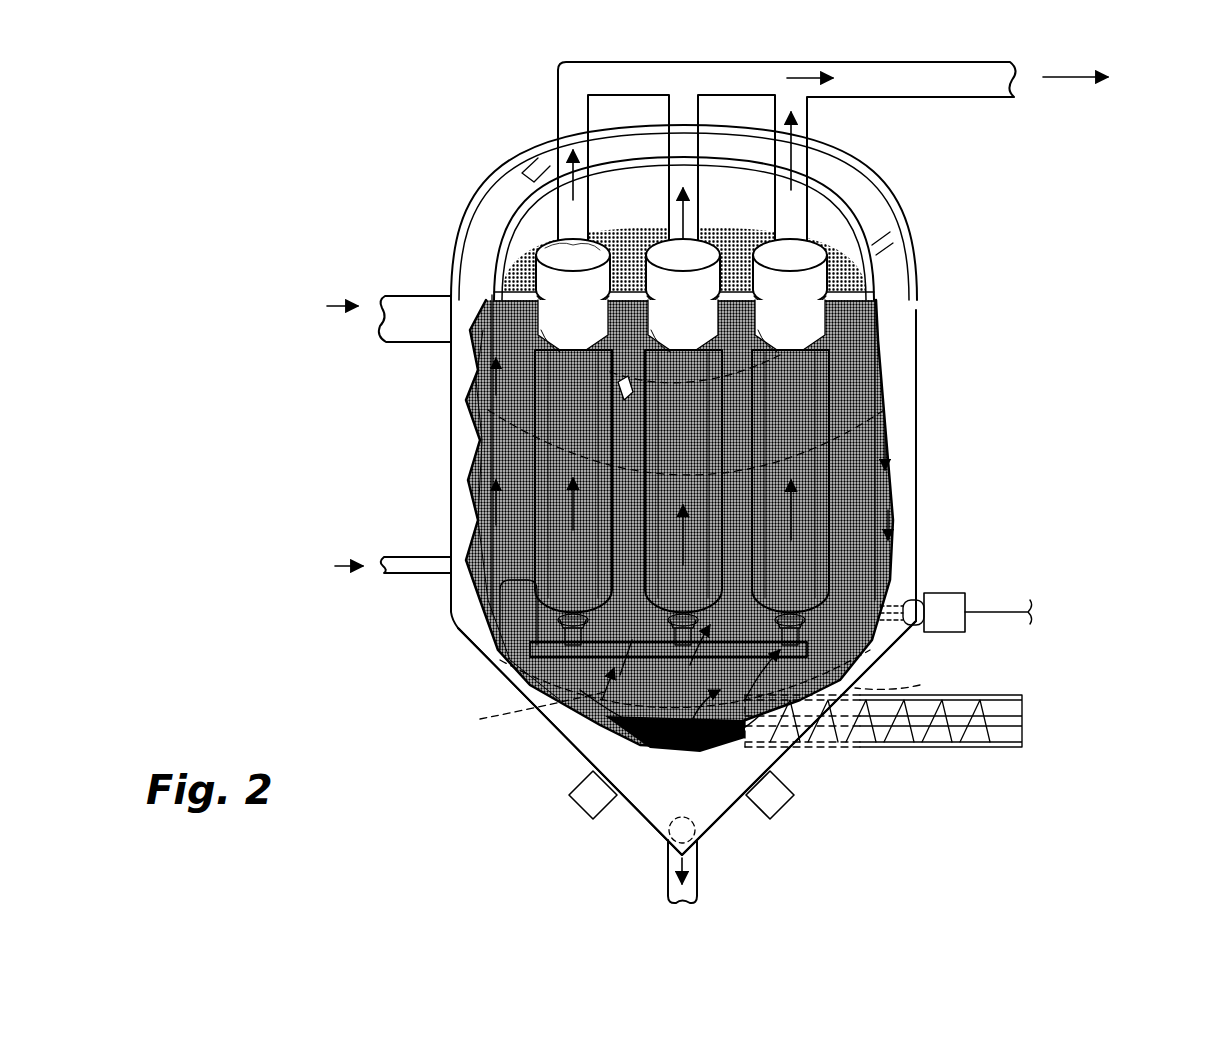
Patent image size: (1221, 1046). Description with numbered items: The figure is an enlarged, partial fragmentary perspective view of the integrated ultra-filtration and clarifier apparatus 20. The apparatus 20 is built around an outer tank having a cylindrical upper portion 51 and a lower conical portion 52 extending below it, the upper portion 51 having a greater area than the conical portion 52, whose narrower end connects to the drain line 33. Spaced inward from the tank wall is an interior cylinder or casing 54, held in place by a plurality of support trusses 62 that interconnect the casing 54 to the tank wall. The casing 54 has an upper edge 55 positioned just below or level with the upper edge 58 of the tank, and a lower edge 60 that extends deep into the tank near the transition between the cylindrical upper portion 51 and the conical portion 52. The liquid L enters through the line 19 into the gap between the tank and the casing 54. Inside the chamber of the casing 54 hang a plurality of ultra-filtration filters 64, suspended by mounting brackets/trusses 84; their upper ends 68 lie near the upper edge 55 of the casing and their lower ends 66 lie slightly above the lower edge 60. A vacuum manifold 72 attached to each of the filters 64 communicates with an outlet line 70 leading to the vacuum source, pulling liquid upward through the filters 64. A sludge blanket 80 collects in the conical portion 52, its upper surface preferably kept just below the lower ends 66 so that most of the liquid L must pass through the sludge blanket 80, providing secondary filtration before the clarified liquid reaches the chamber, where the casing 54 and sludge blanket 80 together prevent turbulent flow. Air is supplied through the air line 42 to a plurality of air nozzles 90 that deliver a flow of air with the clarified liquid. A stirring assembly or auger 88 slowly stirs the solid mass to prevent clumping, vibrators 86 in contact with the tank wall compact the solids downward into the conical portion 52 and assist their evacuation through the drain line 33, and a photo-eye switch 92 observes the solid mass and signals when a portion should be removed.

The line 19 is at (406, 296).
The integrated apparatus 20 is at (962, 520).
The drain line 33 is at (700, 866).
The air line 42 is at (411, 557).
The cylindrical upper portion 51 is at (450, 442).
The lower conical portion 52 is at (568, 724).
The interior casing 54 is at (500, 396).
The upper edge of the casing 55 is at (852, 220).
The upper edge of the tank 58 is at (818, 153).
The lower edge of the casing 60 is at (693, 691).
The support trusses 62 is at (540, 174).
The ultra-filtration filters 64 is at (641, 322).
The lower ends of the filters 66 is at (560, 630).
The upper ends of the filters 68 is at (547, 252).
The outlet line 70 is at (858, 75).
The vacuum manifold 72 is at (600, 75).
The sludge blanket 80 is at (628, 747).
The mounting brackets/trusses 84 is at (555, 312).
The vibrators 86 is at (590, 813).
The stirring assembly or auger 88 is at (955, 750).
The air nozzles 90 is at (545, 645).
The photo-eye switch 92 is at (960, 600).
The liquid L is at (486, 332).